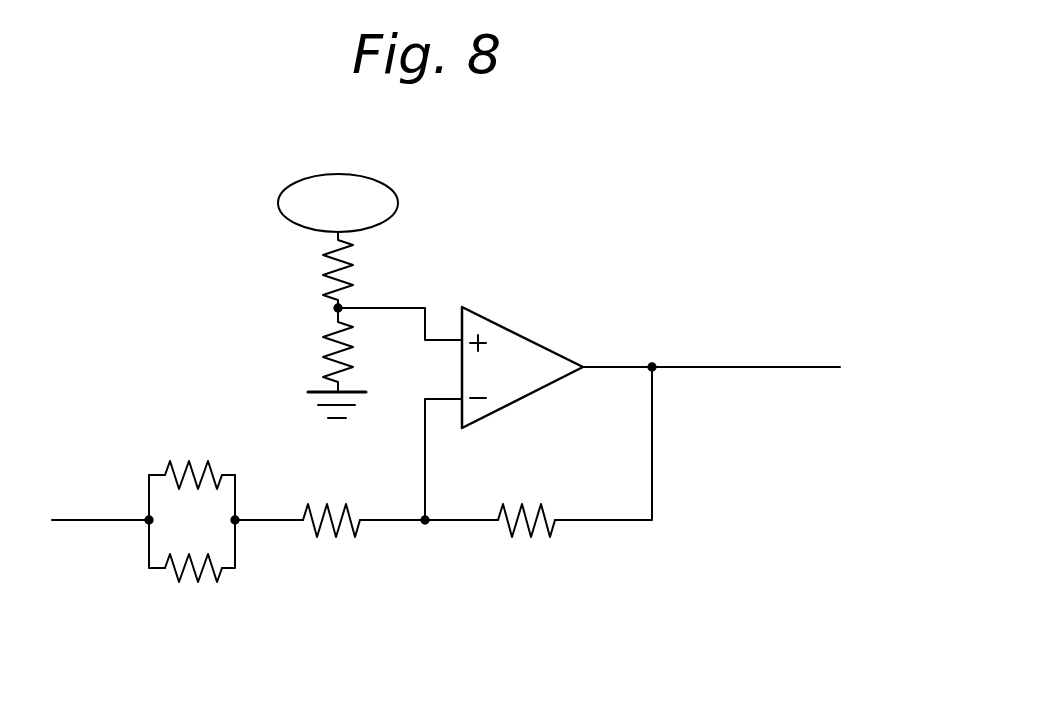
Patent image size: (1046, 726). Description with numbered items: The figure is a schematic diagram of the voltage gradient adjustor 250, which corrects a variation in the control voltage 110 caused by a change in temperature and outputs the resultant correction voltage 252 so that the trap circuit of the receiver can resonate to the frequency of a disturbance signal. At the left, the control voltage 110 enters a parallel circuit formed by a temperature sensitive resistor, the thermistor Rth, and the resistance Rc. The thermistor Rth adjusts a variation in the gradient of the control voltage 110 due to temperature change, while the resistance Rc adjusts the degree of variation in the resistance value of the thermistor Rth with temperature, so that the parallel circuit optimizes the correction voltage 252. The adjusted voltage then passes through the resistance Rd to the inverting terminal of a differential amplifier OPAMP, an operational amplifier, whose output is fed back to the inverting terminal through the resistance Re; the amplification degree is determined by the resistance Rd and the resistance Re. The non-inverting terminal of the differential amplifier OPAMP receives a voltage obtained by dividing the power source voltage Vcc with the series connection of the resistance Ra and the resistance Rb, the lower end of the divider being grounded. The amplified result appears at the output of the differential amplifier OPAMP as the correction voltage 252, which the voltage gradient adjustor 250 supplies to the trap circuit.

The voltage gradient adjustor 250 is at (78, 662).
The control voltage 110 is at (93, 523).
The correction voltage 252 is at (750, 370).
The resistance Ra is at (318, 272).
The resistance Rb is at (318, 348).
The resistance Rc is at (190, 452).
The resistance Rd is at (328, 545).
The resistance Re is at (523, 548).
The thermistor Rth is at (190, 592).
The power source voltage Vcc is at (338, 203).
The differential amplifier OPAMP is at (525, 325).